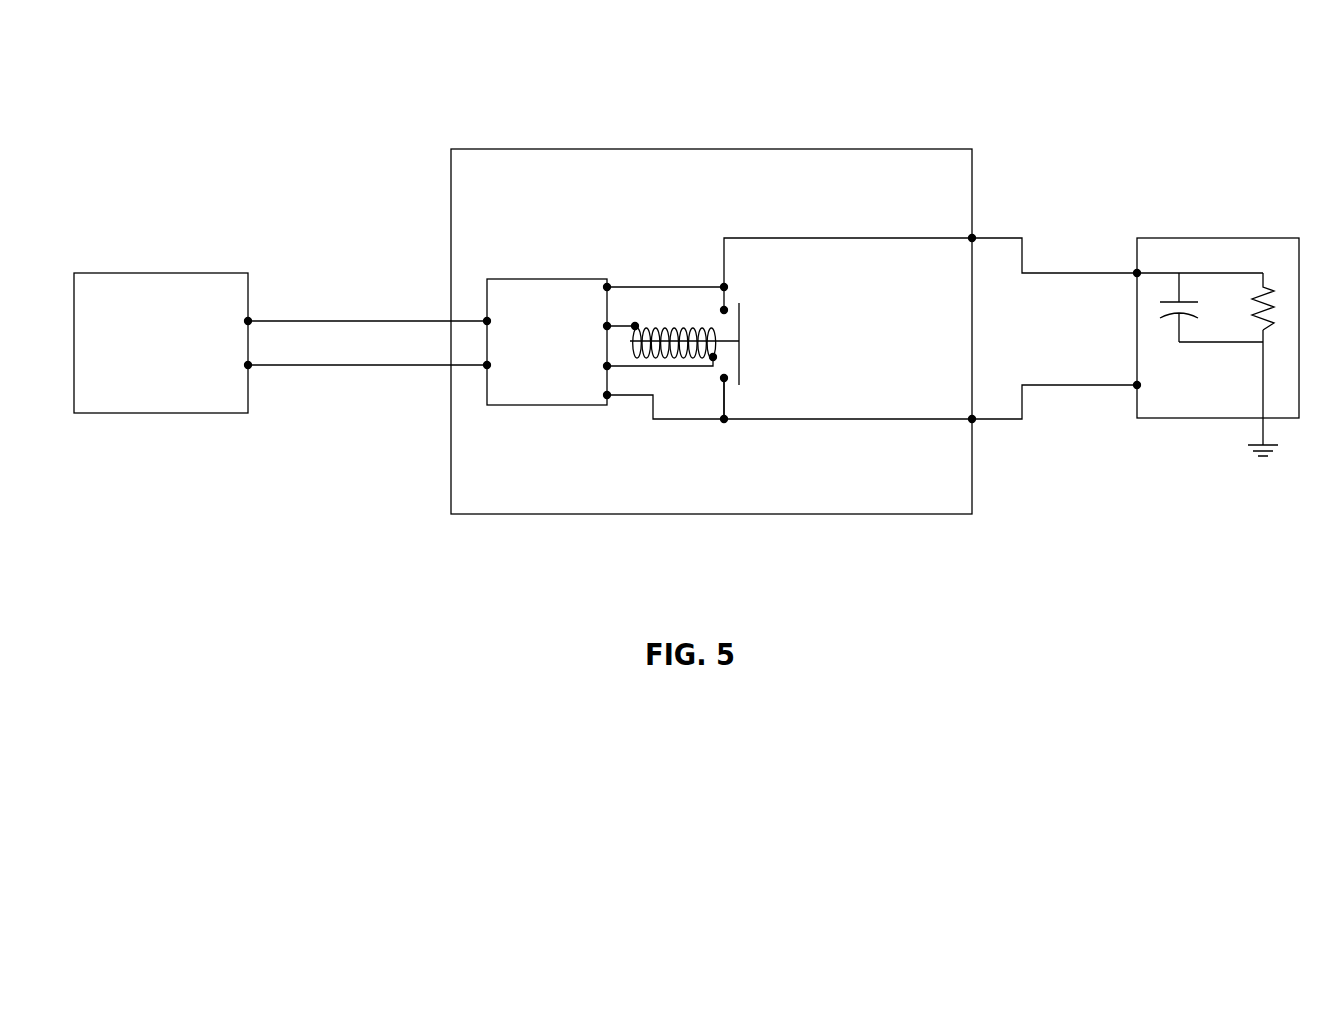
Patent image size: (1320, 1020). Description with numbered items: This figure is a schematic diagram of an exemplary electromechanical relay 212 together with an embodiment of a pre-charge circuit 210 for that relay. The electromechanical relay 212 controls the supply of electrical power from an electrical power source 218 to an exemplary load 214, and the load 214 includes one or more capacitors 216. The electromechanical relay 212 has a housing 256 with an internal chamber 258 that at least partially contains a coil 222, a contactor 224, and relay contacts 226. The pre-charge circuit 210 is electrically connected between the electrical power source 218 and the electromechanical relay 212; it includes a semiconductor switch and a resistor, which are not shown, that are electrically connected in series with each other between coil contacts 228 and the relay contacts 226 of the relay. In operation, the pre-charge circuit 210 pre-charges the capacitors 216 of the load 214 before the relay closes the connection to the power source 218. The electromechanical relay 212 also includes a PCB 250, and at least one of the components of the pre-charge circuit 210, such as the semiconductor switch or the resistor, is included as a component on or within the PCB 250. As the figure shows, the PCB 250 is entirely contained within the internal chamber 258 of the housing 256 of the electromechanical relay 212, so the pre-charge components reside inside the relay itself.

The pre-charge circuit 210 is at (537, 407).
The electromechanical relay 212 is at (840, 145).
The load 214 is at (1180, 420).
The capacitor 216 is at (1168, 292).
The electrical power source 218 is at (187, 358).
The coil 222 is at (651, 330).
The contactor 224 is at (740, 317).
The relay contacts 226 is at (724, 310).
The coil contacts 228 is at (635, 326).
The PCB 250 is at (574, 358).
The housing 256 is at (830, 515).
The internal chamber 258 is at (913, 455).